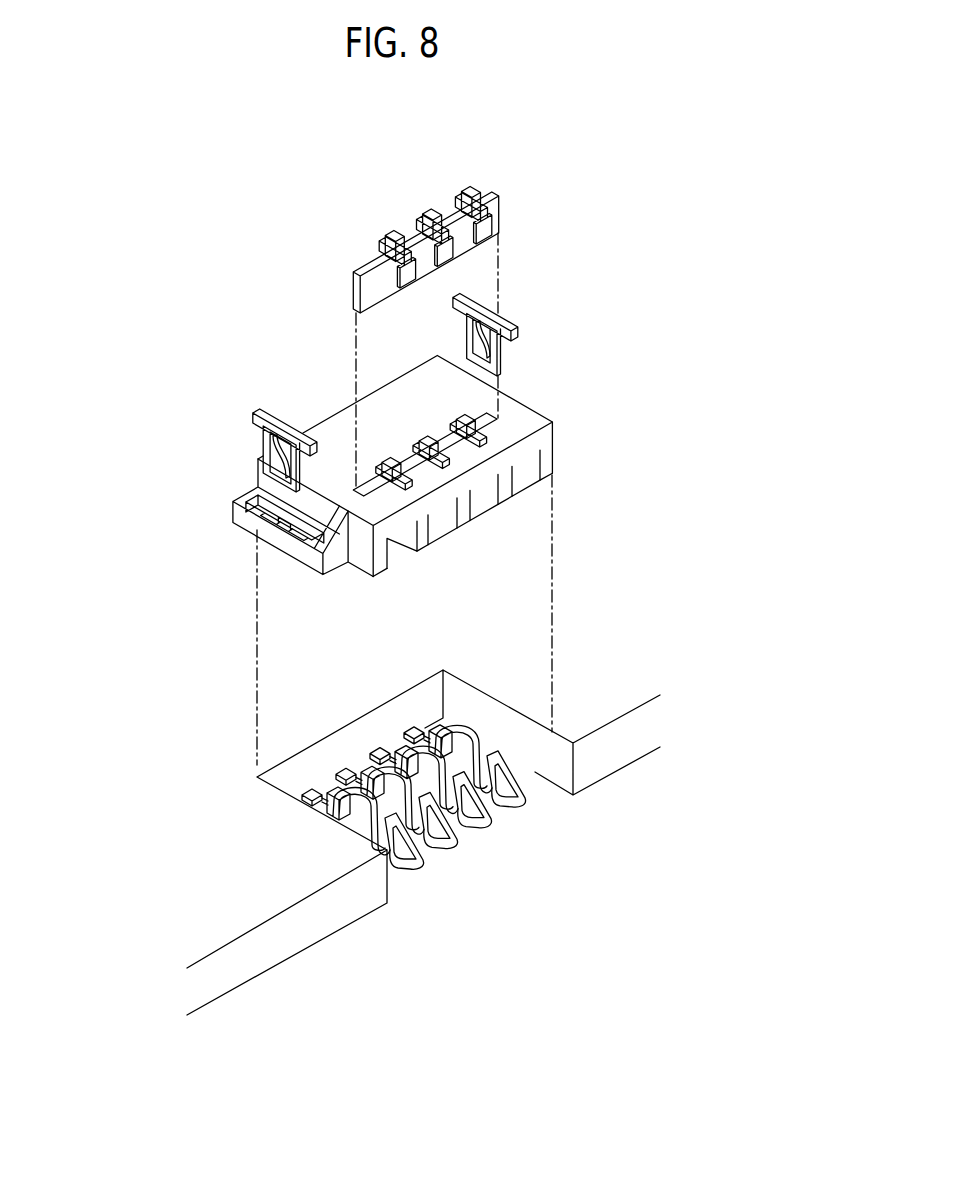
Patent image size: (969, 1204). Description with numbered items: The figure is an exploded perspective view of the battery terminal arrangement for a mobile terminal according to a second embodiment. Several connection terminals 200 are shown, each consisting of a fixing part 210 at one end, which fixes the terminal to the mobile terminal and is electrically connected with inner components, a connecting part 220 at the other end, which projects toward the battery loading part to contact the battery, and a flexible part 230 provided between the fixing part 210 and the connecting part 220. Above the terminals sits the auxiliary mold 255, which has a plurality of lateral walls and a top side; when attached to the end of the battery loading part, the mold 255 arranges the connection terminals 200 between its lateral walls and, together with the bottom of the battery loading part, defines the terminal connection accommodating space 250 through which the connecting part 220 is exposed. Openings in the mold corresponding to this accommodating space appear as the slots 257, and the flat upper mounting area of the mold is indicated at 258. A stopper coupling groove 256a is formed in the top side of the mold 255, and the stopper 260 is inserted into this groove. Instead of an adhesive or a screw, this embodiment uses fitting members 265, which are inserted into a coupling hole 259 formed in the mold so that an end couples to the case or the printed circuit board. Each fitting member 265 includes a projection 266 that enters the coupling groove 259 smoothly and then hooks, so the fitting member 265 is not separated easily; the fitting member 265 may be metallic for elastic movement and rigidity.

The connection terminal 200 is at (288, 730).
The fixing part 210 is at (297, 798).
The connecting part 220 is at (393, 848).
The flexible part 230 is at (370, 827).
The terminal connection accommodating space 250 is at (393, 553).
The auxiliary mold 255 is at (595, 398).
The stopper coupling groove 256a is at (497, 418).
The slot openings in holder 257 is at (550, 465).
The mounting surface of holder 258 is at (333, 423).
The coupling hole 259 is at (270, 508).
The stopper 260 is at (497, 212).
The fitting member 265 is at (508, 320).
The projection 266 is at (477, 343).